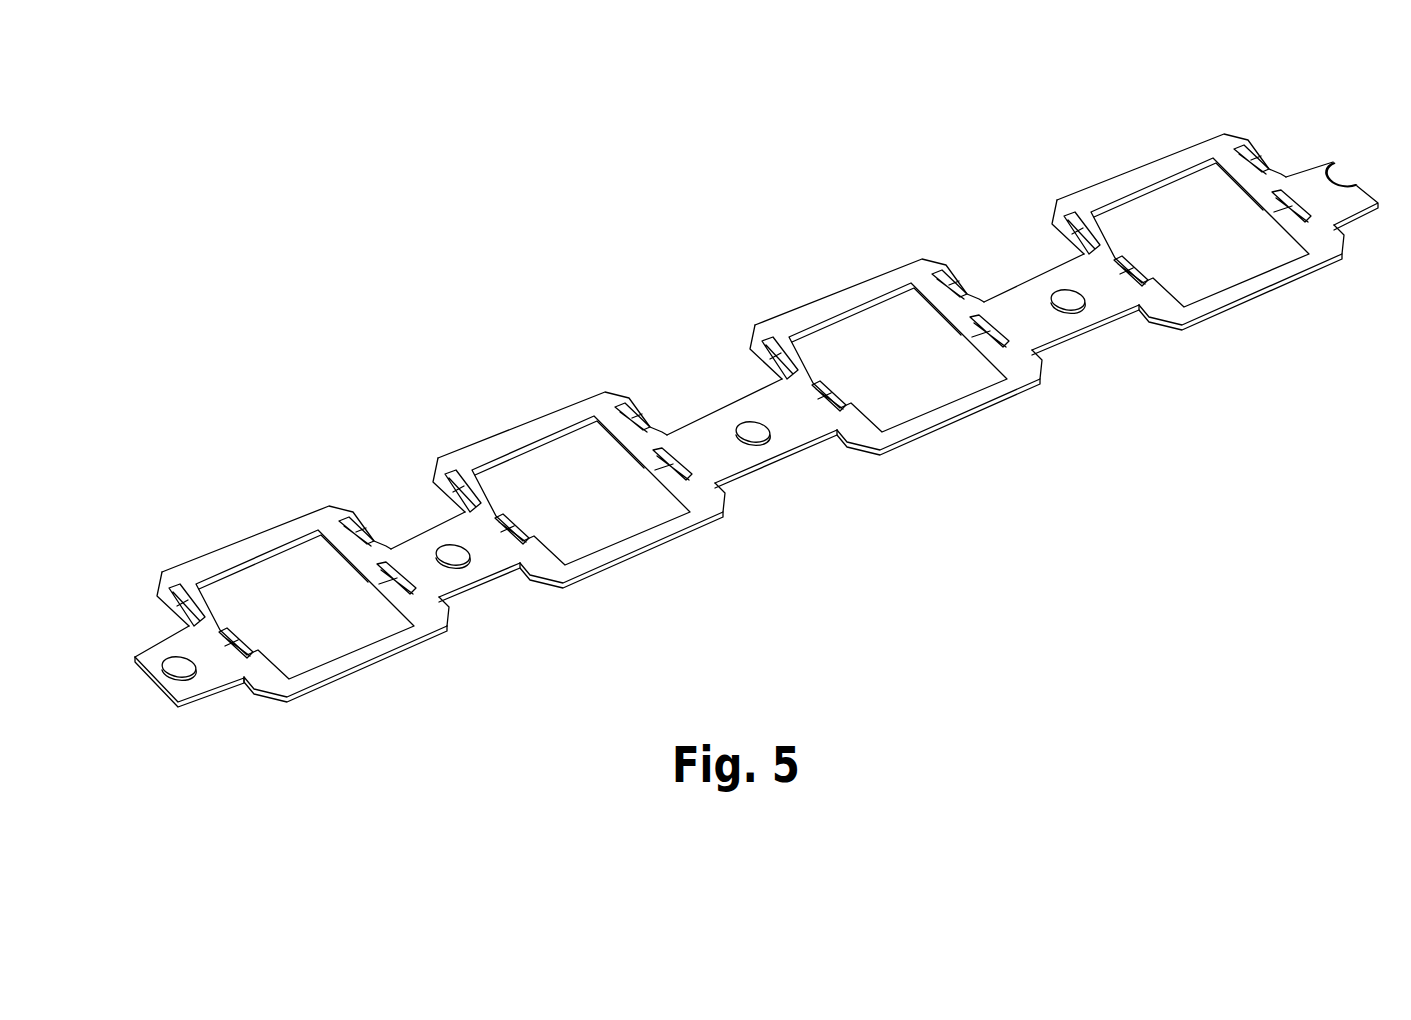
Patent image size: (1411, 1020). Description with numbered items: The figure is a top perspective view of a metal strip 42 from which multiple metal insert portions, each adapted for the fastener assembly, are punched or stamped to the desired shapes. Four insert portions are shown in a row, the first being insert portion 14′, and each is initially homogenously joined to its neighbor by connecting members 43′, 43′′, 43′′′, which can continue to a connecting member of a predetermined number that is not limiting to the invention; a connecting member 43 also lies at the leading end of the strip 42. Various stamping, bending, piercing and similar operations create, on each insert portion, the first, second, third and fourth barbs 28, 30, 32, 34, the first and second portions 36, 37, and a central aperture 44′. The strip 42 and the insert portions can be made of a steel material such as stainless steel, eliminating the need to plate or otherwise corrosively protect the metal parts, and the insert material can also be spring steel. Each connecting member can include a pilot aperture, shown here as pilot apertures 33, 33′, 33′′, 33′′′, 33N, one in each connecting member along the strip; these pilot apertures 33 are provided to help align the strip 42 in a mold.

The insert portion 14′ is at (237, 537).
The first barb 28 is at (361, 500).
The second barb 30 is at (362, 603).
The third barb 32 is at (138, 582).
The pilot aperture 33 is at (192, 682).
The pilot aperture 33′ is at (443, 547).
The pilot aperture 33′′ is at (745, 422).
The pilot aperture 33′′′ is at (1058, 292).
The pilot aperture 33N is at (1356, 188).
The fourth barb 34 is at (252, 620).
The first portion 36 is at (229, 542).
The second portion 37 is at (345, 680).
The strip 42 is at (140, 637).
The connecting member 43 is at (134, 662).
The connecting member 43′ is at (489, 578).
The connecting member 43′′ is at (779, 458).
The connecting member 43′′′ is at (1091, 327).
The central aperture 44′ is at (305, 604).